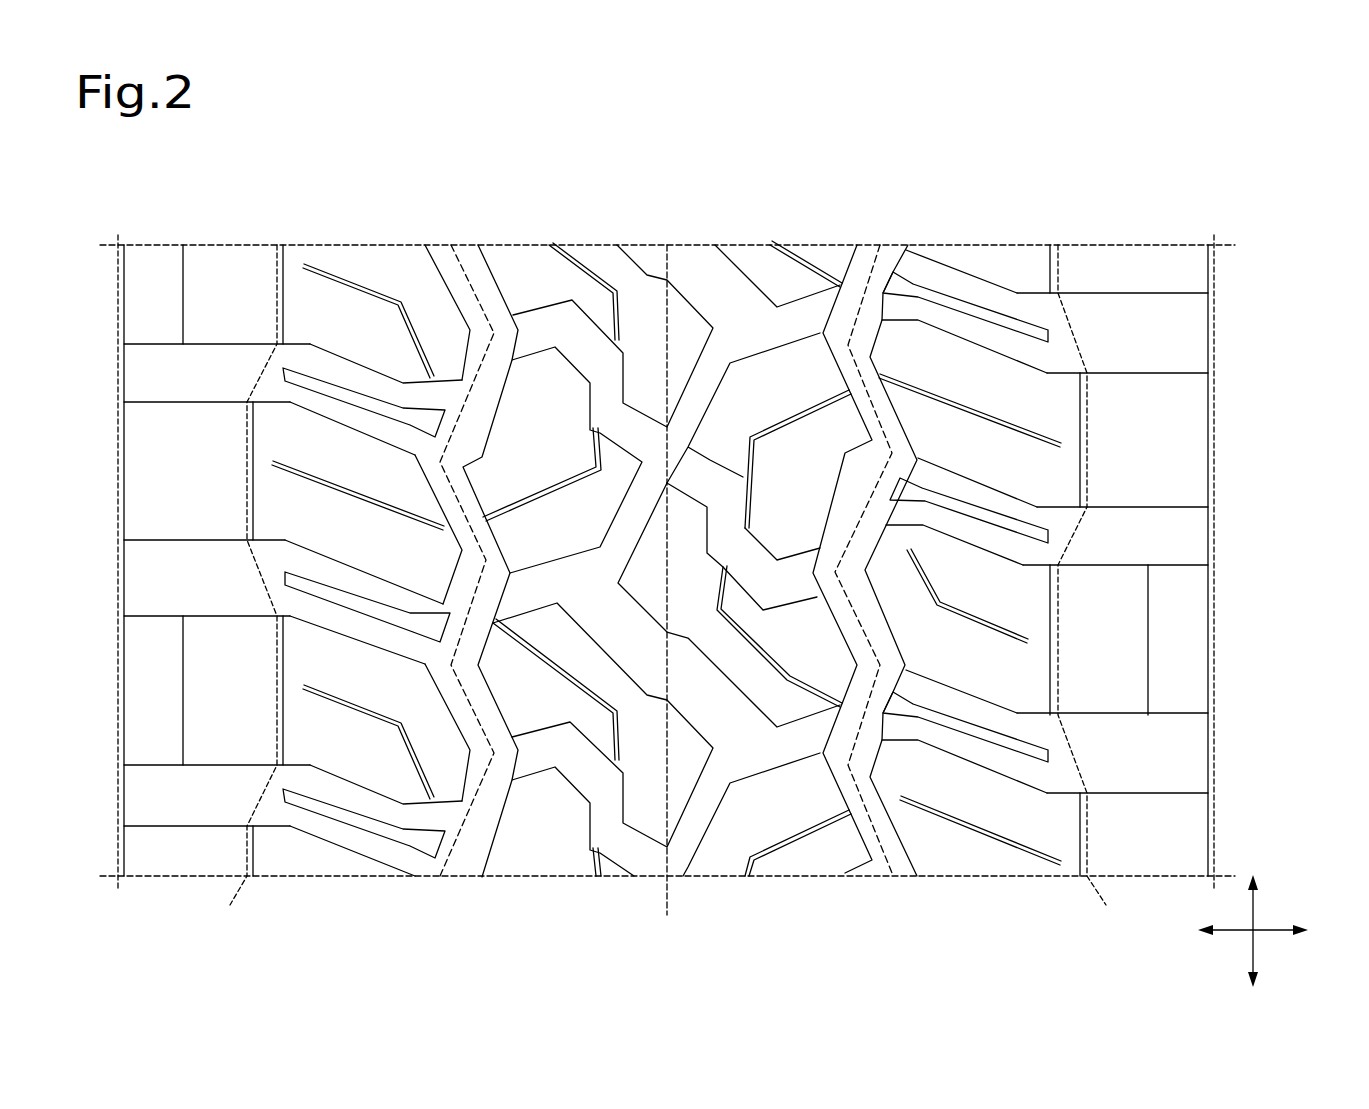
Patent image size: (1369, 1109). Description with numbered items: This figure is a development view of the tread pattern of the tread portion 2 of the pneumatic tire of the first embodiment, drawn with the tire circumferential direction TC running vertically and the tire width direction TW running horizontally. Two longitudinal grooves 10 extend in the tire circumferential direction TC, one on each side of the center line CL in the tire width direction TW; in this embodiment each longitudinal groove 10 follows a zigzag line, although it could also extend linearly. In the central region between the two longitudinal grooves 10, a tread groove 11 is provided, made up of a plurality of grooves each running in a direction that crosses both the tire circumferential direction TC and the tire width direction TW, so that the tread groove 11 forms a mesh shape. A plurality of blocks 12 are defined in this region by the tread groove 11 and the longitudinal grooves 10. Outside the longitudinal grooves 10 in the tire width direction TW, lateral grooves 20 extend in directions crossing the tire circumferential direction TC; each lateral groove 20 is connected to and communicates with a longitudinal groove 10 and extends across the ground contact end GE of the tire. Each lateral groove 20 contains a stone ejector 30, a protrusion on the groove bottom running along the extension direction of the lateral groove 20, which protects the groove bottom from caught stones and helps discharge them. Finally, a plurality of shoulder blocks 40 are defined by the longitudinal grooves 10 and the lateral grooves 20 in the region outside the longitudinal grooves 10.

The tread portion 2 is at (1090, 227).
The longitudinal groove 10 is at (466, 264).
The tread groove 11 is at (718, 262).
The block 12 is at (562, 270).
The lateral groove 20 is at (334, 355).
The stone ejector 30 is at (368, 388).
The shoulder block 40 is at (298, 252).
The ground contact end GE is at (665, 591).
The center line CL is at (672, 906).
The tire circumferential direction TC is at (1256, 908).
The tire width direction TW is at (1260, 930).